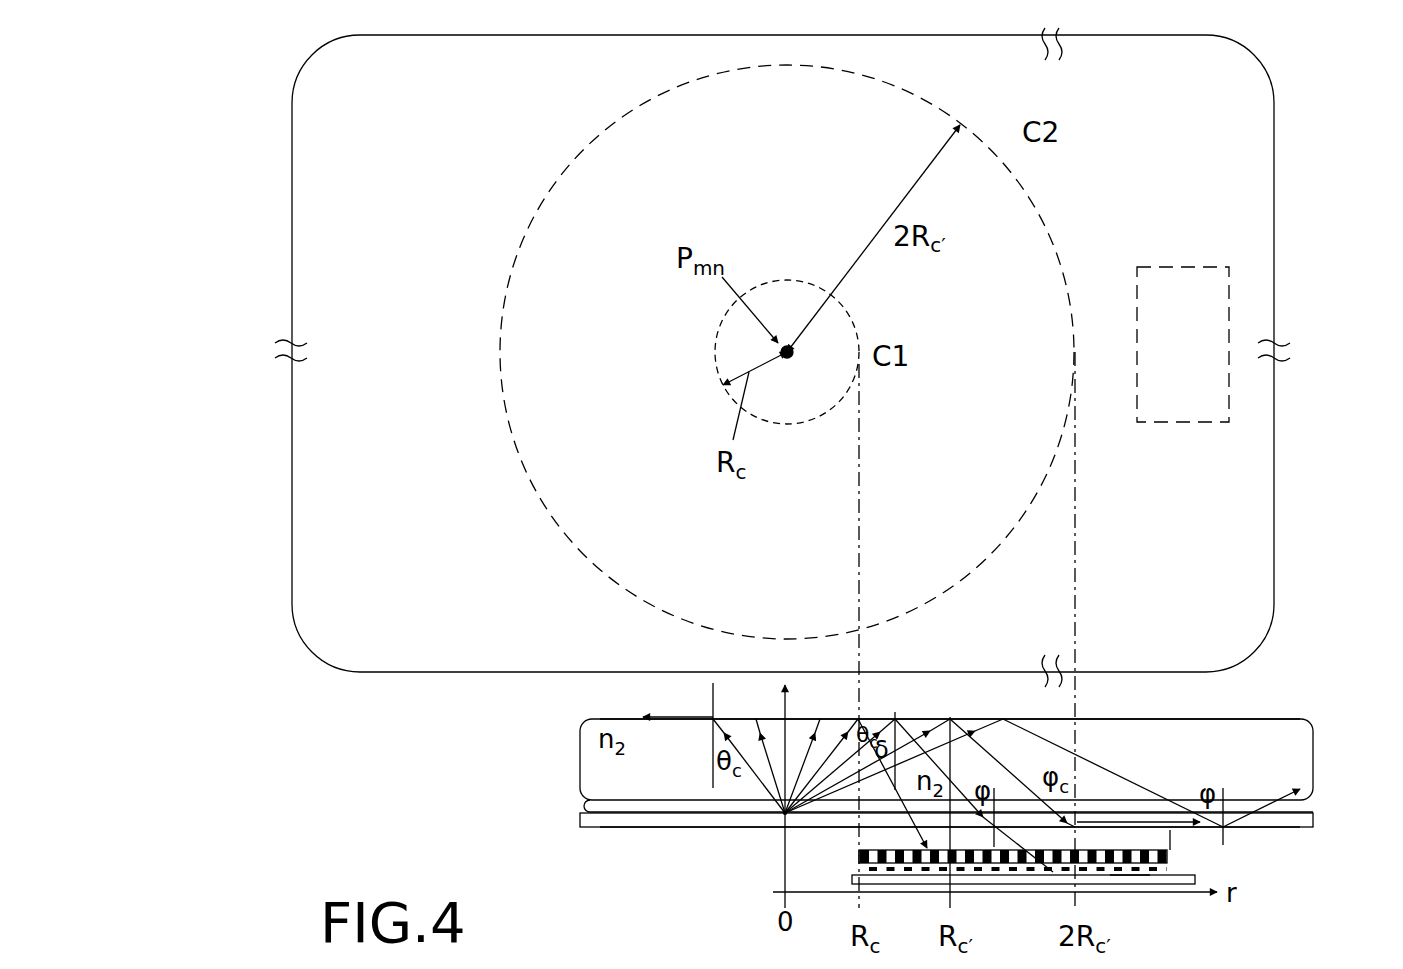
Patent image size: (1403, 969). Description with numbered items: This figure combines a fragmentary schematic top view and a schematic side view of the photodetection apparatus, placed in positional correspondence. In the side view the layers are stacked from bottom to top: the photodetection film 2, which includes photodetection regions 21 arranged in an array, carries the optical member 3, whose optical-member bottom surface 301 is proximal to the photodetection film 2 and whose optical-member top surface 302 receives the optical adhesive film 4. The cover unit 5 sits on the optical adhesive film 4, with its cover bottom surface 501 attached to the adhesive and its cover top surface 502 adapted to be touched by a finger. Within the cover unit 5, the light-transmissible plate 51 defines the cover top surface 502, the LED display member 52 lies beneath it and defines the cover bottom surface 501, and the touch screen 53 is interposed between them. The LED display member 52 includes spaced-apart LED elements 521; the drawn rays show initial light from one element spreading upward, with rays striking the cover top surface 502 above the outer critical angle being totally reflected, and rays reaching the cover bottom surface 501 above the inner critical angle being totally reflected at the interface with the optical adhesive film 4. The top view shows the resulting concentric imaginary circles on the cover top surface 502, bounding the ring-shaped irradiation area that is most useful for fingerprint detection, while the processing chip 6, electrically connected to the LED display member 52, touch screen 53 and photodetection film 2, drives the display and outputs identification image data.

The photodetection film 2 is at (1195, 880).
The photodetection regions 21 is at (1125, 873).
The optical member 3 is at (1167, 858).
The optical-member bottom surface 301 is at (907, 867).
The optical-member top surface 302 is at (1005, 845).
The optical adhesive film 4 is at (1170, 840).
The cover unit 5 is at (287, 212).
The light-transmissible plate 51 is at (590, 750).
The LED display member 52 is at (592, 825).
The touch screen 53 is at (592, 807).
The cover bottom surface 501 is at (643, 827).
The cover top surface 502 is at (624, 718).
The LED elements 521 is at (780, 817).
The processing chip 6 is at (1229, 303).